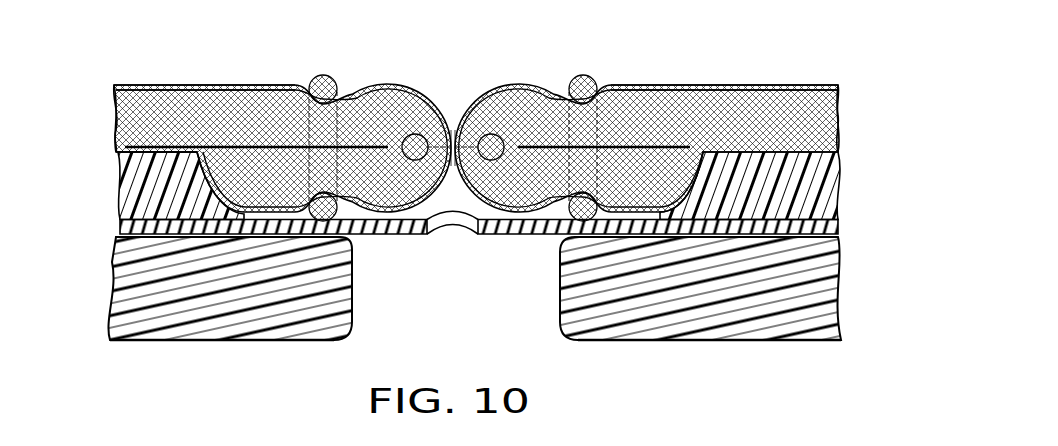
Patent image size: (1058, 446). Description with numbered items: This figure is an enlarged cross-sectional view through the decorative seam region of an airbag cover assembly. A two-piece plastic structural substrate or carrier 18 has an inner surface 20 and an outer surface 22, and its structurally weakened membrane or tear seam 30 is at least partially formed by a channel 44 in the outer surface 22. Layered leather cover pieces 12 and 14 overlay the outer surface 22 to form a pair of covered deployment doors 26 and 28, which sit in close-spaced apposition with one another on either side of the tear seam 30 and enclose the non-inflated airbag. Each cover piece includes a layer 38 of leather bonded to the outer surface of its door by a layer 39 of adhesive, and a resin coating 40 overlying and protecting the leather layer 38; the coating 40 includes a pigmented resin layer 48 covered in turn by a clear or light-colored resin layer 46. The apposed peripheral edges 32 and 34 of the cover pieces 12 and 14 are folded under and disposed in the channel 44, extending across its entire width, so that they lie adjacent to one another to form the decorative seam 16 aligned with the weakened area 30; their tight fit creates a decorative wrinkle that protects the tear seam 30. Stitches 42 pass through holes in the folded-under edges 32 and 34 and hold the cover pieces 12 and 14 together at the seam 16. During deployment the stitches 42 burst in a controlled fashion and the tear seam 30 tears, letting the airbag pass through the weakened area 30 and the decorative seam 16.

The cover piece 12 is at (744, 82).
The cover piece 14 is at (153, 82).
The decorative seam 16 is at (452, 127).
The structural substrate or carrier 18 is at (845, 308).
The inner surface 20 is at (735, 343).
The outer surface 22 is at (812, 148).
The deployment door 26 is at (663, 83).
The deployment door 28 is at (243, 83).
The tear seam 30 is at (503, 237).
The peripheral edge 32 is at (640, 173).
The peripheral edge 34 is at (278, 173).
The layer of leather 38 is at (116, 125).
The layer of adhesive 39 is at (732, 148).
The resin coating 40 is at (106, 83).
The stitches 42 is at (315, 80).
The channel 44 is at (498, 213).
The clear or light-colored resin layer 46 is at (843, 84).
The pigmented resin layer 48 is at (843, 93).